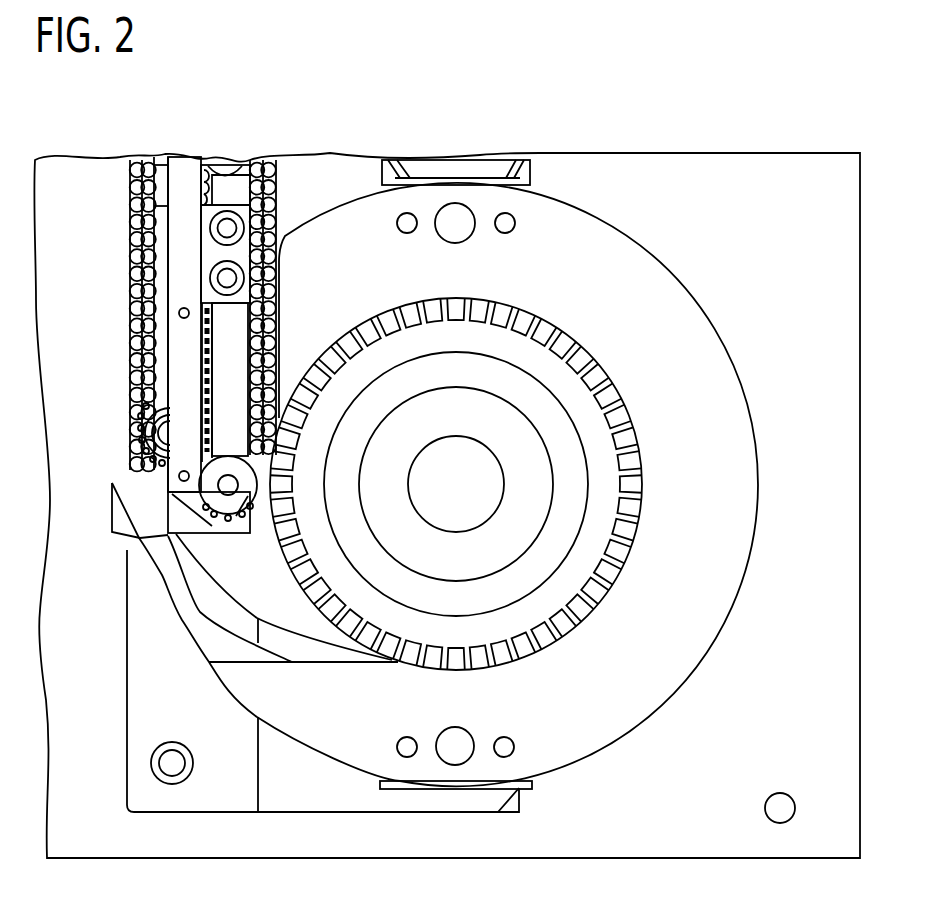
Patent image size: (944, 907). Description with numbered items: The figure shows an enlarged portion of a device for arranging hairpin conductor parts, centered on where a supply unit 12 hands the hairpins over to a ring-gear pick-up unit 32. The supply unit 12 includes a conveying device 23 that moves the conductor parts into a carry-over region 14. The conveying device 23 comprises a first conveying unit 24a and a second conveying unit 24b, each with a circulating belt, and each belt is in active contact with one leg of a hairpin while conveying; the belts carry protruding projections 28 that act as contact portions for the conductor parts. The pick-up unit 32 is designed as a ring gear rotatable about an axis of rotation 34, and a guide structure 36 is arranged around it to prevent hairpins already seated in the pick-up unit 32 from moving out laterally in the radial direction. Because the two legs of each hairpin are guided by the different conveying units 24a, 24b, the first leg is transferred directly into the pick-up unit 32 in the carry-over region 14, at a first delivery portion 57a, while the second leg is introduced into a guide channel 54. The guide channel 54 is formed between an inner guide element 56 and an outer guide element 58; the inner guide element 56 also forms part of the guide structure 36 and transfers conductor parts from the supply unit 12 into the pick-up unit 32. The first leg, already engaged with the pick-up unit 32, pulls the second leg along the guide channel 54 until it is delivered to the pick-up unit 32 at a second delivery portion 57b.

The supply unit 12 is at (170, 141).
The carry-over region 14 is at (254, 541).
The conveying device 23 is at (242, 140).
The first conveying unit 24a is at (265, 271).
The second conveying unit 24b is at (143, 300).
The projections 28 is at (143, 229).
The pick-up unit 32 is at (625, 484).
The axis of rotation 34 is at (480, 484).
The guide structure 36 is at (755, 484).
The guide channel 54 is at (173, 579).
The inner guide element 56 is at (298, 625).
The first delivery portion 57a is at (216, 404).
The second delivery portion 57b is at (371, 684).
The outer guide element 58 is at (114, 508).